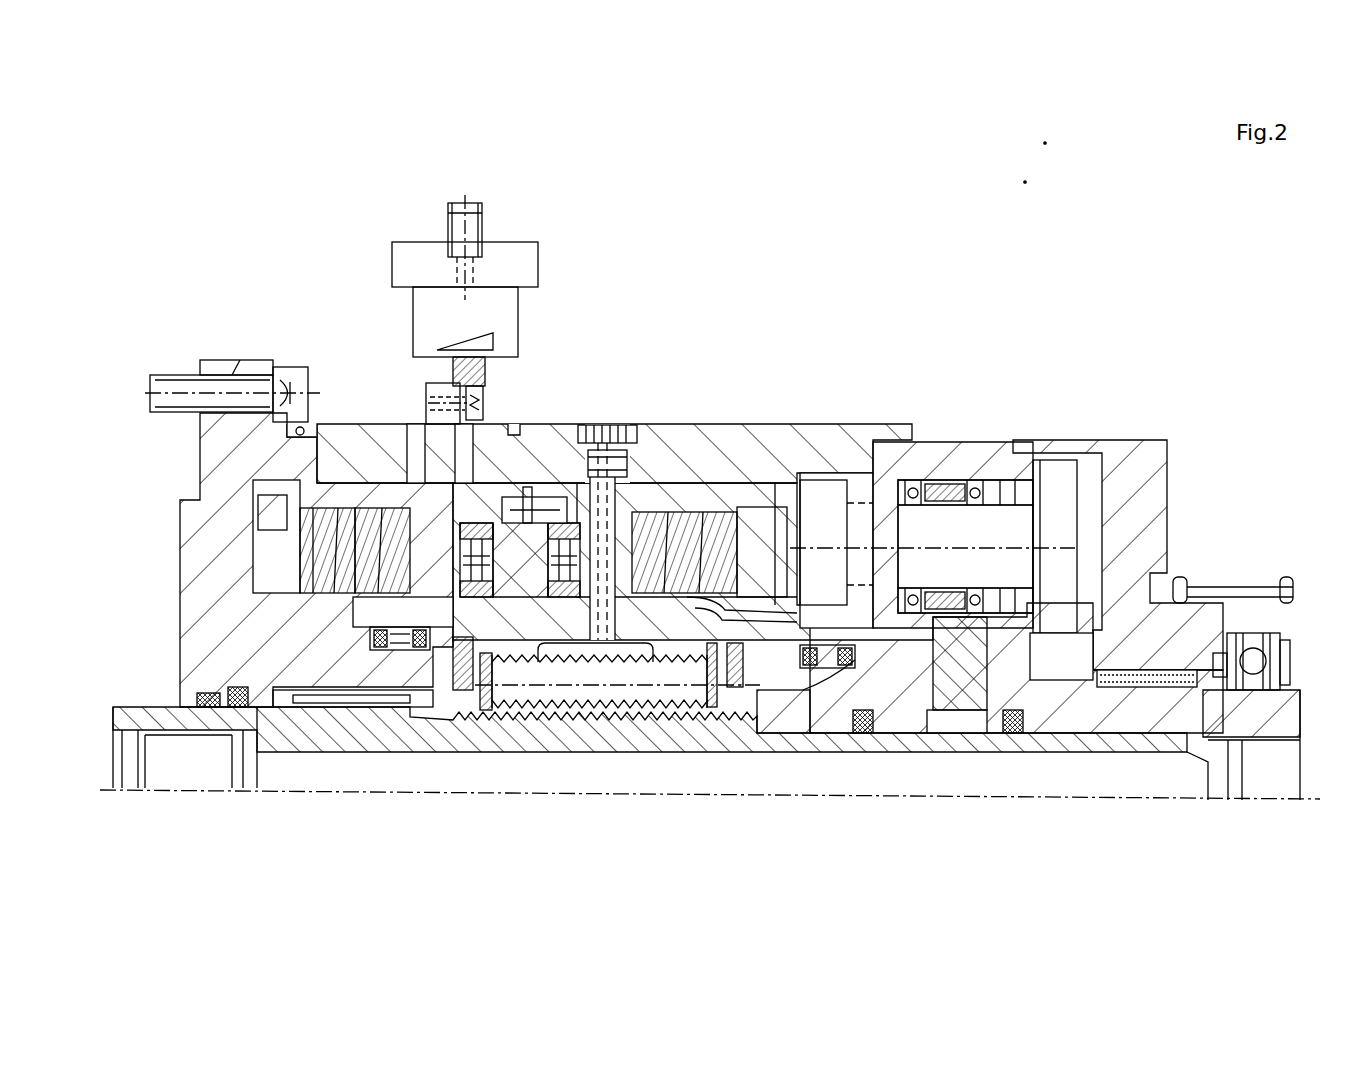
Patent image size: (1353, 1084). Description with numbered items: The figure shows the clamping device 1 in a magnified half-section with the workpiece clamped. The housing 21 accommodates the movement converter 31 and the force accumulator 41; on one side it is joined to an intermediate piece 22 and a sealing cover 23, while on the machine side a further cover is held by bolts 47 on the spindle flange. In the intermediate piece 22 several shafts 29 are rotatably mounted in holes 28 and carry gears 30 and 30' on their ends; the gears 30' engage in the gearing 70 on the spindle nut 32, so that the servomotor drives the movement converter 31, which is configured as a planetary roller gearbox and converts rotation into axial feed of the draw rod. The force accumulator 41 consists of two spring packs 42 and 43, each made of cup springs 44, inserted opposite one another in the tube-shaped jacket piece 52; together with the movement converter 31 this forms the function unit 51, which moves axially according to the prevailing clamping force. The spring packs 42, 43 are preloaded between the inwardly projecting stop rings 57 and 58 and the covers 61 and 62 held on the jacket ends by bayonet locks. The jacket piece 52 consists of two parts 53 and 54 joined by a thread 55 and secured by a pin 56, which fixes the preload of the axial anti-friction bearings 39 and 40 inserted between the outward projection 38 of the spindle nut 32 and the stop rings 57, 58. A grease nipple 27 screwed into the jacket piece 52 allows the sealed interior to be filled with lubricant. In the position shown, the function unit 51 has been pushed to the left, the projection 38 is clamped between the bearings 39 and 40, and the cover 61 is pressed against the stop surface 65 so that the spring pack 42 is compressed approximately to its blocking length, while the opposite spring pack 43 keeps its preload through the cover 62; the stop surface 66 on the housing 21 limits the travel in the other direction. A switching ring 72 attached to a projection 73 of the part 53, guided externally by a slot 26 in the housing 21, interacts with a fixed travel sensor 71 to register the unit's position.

The clamping device 1 is at (1147, 262).
The housing 21 is at (760, 424).
The intermediate piece 22 is at (927, 442).
The sealing cover 23 is at (1140, 520).
The slot 26 is at (480, 450).
The grease nipple 27 is at (632, 430).
The holes 28 is at (977, 587).
The shafts 29 is at (957, 537).
The gears 30 is at (1059, 485).
The gears 30' is at (839, 500).
The movement converter 31 is at (617, 738).
The spindle nut 32 is at (662, 503).
The projection 38 is at (525, 600).
The axial anti-friction bearing 39 is at (480, 597).
The axial anti-friction bearing 40 is at (583, 645).
The force accumulator 41 is at (273, 557).
The spring pack 42 is at (340, 597).
The spring pack 43 is at (690, 625).
The cup springs 44 is at (290, 580).
The bolts 47 is at (287, 367).
The function unit 51 is at (340, 330).
The jacket piece 52 is at (318, 480).
The jacket part 53 is at (363, 473).
The jacket part 54 is at (690, 500).
The thread 55 is at (603, 425).
The pin 56 is at (530, 487).
The stop ring 57 is at (437, 575).
The stop ring 58 is at (633, 625).
The cover 61 is at (262, 708).
The cover 62 is at (737, 633).
The stop surface 65 is at (268, 537).
The stop surface 66 is at (770, 490).
The gearing 70 is at (805, 483).
The travel sensor 71 is at (520, 318).
The switching ring 72 is at (450, 357).
The projection 73 is at (482, 392).